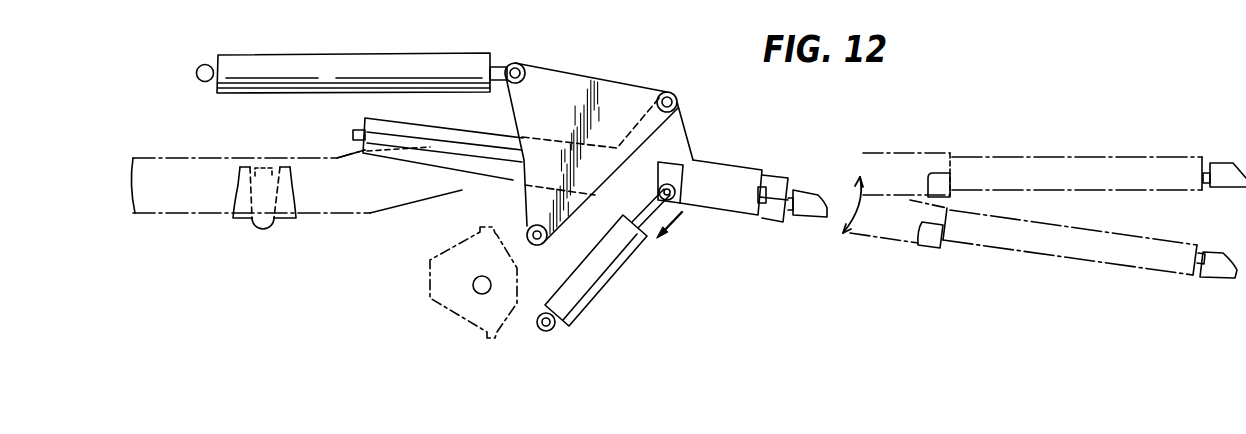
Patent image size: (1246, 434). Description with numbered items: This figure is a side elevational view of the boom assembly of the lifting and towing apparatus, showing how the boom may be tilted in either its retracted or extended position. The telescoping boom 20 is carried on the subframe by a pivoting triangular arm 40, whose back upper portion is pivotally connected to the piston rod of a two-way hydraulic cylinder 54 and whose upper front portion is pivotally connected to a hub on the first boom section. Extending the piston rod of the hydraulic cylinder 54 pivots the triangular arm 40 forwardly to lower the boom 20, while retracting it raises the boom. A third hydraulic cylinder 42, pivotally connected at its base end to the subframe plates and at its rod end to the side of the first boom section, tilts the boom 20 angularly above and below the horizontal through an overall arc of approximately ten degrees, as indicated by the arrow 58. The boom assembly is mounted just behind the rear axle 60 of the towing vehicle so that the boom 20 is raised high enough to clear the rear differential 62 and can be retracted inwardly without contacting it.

The two-way hydraulic cylinder 54 is at (344, 54).
The pivoting triangular arm 40 is at (569, 73).
The telescoping boom 20 is at (786, 163).
The arrow 58 is at (857, 190).
The third hydraulic cylinder 42 is at (607, 287).
The rear axle 60 is at (480, 277).
The rear differential 62 is at (445, 305).